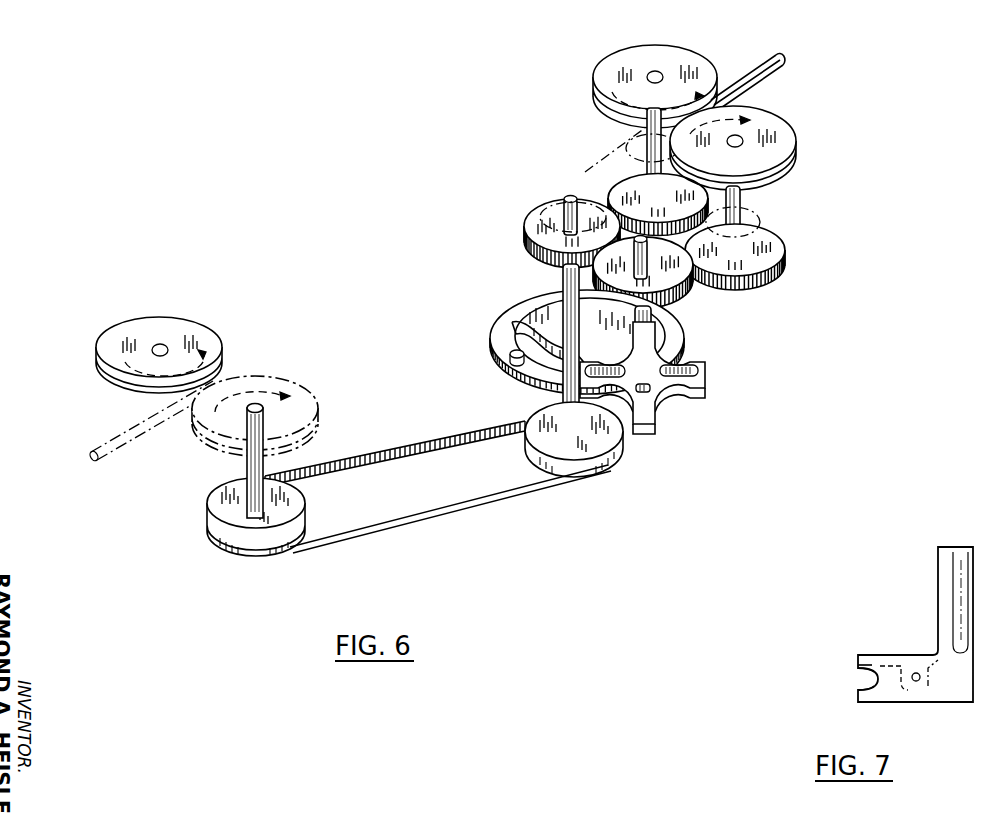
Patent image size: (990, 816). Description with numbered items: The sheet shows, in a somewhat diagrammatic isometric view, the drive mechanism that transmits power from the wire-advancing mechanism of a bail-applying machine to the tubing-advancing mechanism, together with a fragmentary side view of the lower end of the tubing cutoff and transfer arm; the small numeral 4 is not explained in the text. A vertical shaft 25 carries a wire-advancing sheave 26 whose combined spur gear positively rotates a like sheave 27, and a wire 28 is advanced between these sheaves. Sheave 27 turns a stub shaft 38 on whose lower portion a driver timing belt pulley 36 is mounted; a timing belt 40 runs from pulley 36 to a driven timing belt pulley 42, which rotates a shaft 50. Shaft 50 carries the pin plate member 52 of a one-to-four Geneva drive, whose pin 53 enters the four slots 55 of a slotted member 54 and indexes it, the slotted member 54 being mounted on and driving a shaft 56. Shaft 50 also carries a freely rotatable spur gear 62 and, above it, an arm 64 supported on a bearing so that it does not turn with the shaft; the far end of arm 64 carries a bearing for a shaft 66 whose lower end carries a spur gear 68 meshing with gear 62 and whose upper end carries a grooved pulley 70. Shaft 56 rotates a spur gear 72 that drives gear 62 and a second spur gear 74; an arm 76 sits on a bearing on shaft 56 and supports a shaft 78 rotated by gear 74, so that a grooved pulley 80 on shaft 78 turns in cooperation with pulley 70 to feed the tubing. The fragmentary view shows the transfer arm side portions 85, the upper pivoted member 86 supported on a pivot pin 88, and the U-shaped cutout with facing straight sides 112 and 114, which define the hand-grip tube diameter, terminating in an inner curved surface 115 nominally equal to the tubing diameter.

In FIG. 6, the gear train assembly 4 is at (625, 488).
In FIG. 6, the vertical shaft 25 is at (168, 350).
In FIG. 6, the wire-advancing sheave 26 is at (152, 330).
In FIG. 6, the wire-advancing sheave 27 is at (300, 398).
In FIG. 6, the wire 28 is at (95, 461).
In FIG. 6, the driver timing belt pulley 36 is at (272, 535).
In FIG. 6, the stub shaft 38 is at (228, 490).
In FIG. 6, the timing belt 40 is at (424, 510).
In FIG. 6, the driven timing belt pulley 42 is at (605, 476).
In FIG. 6, the shaft 50 is at (568, 335).
In FIG. 6, the pin plate member 52 is at (498, 338).
In FIG. 6, the pin 53 is at (514, 362).
In FIG. 6, the slotted member 54 is at (666, 389).
In FIG. 6, the slots 55 is at (705, 377).
In FIG. 6, the shaft 56 is at (652, 350).
In FIG. 6, the spur gear 62 is at (535, 226).
In FIG. 6, the arm 64 is at (578, 182).
In FIG. 6, the shaft 66 is at (637, 148).
In FIG. 6, the spur gear 68 is at (632, 185).
In FIG. 6, the grooved pulley 70 is at (617, 67).
In FIG. 6, the spur gear 72 is at (690, 300).
In FIG. 6, the spur gear 74 is at (787, 268).
In FIG. 6, the arm 76 is at (764, 222).
In FIG. 6, the shaft 78 is at (760, 205).
In FIG. 6, the grooved pulley 80 is at (782, 130).
In FIG. 7, the U-side portions 85 is at (902, 692).
In FIG. 7, the upper pivoted member 86 is at (893, 660).
In FIG. 7, the pivot pin 88 is at (950, 702).
In FIG. 7, the straight side portion 112 is at (860, 676).
In FIG. 7, the straight side portion 114 is at (862, 690).
In FIG. 7, the inner curved surface 115 is at (872, 664).